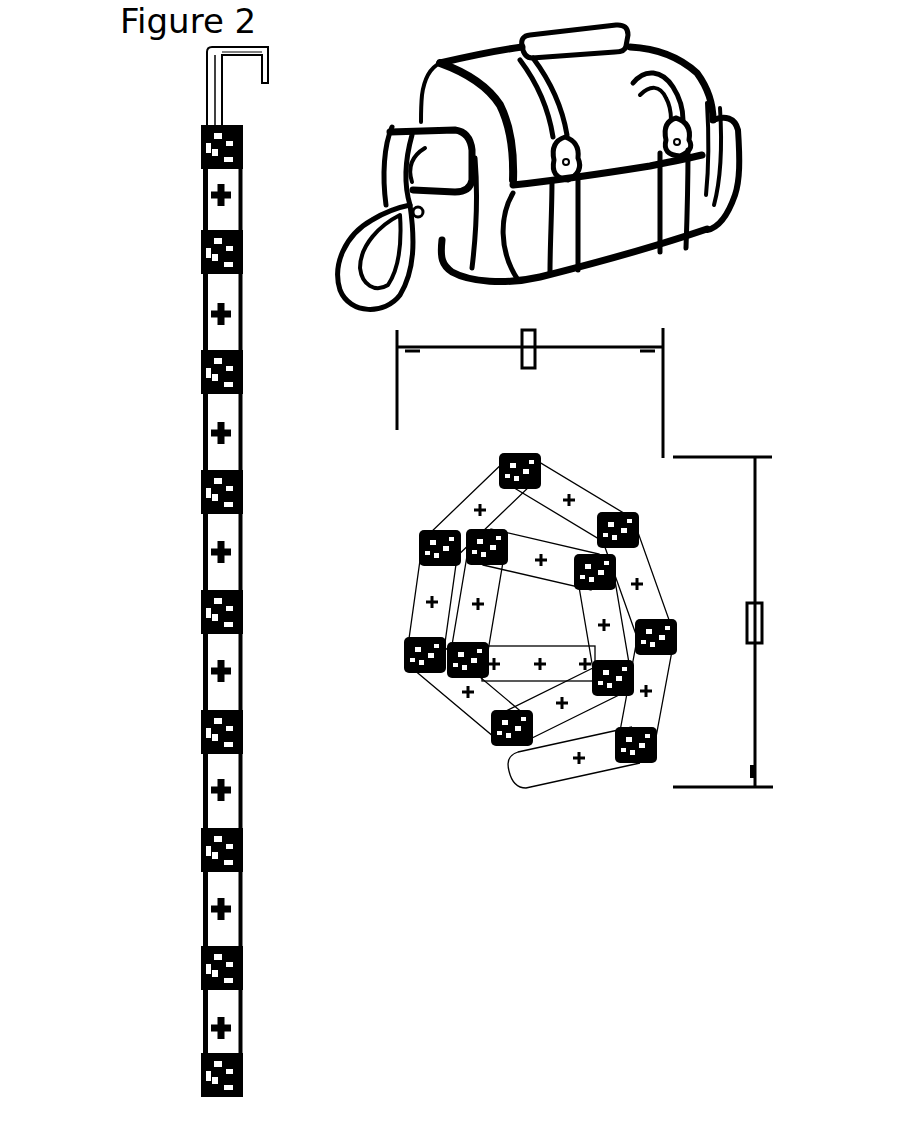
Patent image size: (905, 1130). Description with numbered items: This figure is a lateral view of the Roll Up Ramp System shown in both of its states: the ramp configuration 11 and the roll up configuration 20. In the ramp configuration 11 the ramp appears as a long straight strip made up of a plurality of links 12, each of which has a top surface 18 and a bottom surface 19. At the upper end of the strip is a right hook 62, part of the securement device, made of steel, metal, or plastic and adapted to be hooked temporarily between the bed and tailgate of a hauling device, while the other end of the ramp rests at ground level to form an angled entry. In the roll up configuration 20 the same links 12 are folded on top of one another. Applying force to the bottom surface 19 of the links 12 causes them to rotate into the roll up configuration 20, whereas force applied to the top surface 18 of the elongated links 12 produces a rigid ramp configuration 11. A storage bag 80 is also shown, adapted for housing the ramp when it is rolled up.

The roll up ramp in ramp configuration 11 is at (224, 609).
The link 12 is at (247, 972).
The top surface 18 is at (200, 860).
The bottom surface 19 is at (237, 768).
The roll up configuration 20 is at (412, 572).
The right hook 62 is at (208, 82).
The storage bag 80 is at (641, 237).